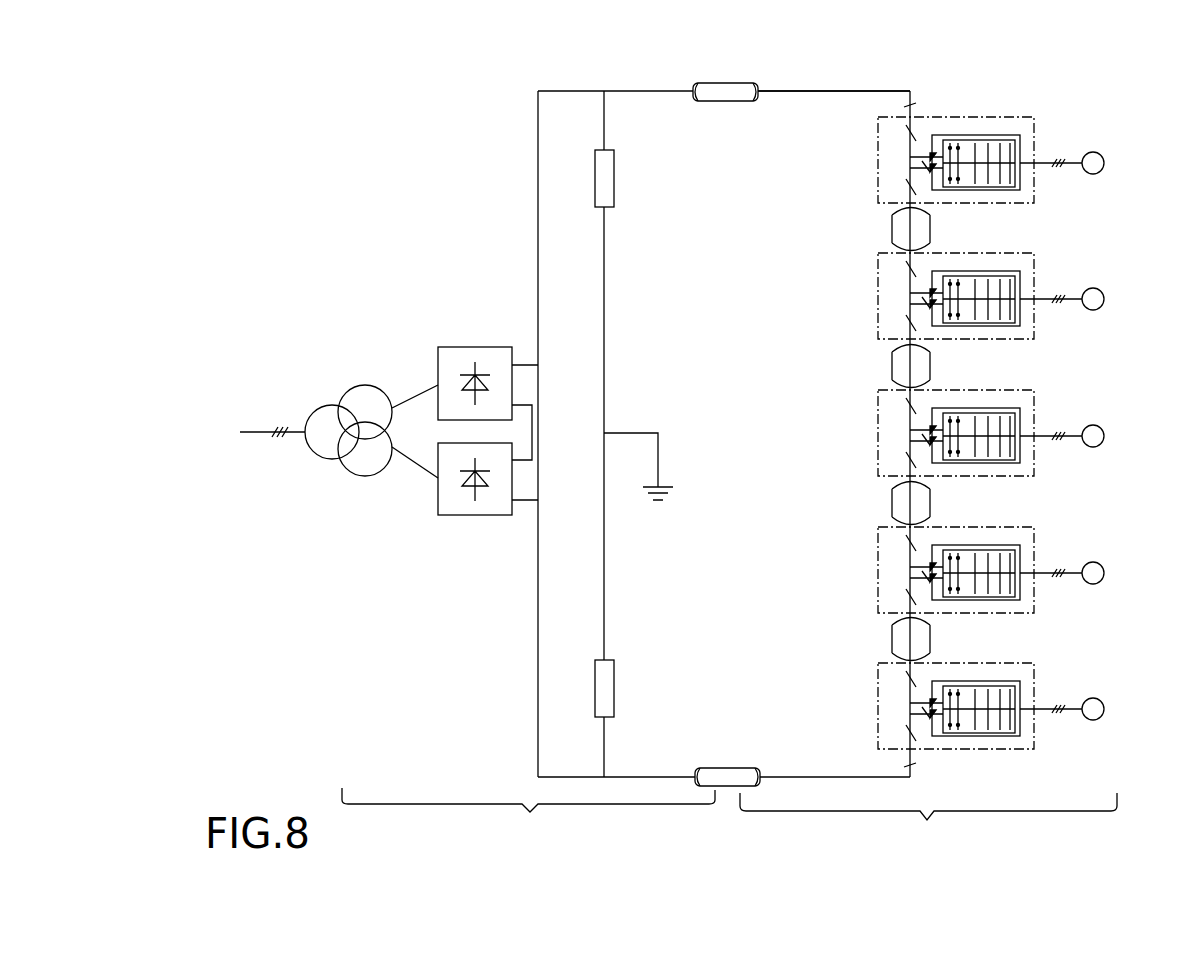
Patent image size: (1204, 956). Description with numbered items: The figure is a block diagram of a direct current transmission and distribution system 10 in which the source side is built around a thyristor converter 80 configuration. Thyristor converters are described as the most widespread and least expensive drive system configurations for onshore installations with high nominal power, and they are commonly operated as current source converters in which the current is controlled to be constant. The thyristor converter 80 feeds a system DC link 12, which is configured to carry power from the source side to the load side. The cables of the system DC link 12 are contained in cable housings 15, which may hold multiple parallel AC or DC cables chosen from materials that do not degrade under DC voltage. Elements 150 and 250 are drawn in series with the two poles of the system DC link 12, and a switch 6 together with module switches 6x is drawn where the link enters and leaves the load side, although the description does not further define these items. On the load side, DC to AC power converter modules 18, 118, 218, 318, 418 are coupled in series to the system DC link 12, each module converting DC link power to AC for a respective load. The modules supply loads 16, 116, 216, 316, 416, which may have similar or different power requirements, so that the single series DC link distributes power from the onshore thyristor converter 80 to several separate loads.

The direct current transmission and distribution system 10 is at (285, 96).
The thyristor converter 80 is at (491, 294).
The resistor / current limiting element (positive pole) 150 is at (614, 180).
The resistor / current limiting element (negative pole) 250 is at (614, 685).
The cable housing 15 is at (728, 84).
The system DC link 12 is at (691, 100).
The switch 6 is at (916, 435).
The module isolation switch 6x is at (901, 160).
The DC to AC power converter module 18 is at (957, 117).
The DC to AC power converter module 118 is at (957, 253).
The DC to AC power converter module 218 is at (957, 390).
The DC to AC power converter module 318 is at (957, 527).
The DC to AC power converter module 418 is at (957, 663).
The load 16 is at (1093, 152).
The load 116 is at (1093, 288).
The load 216 is at (1093, 425).
The load 316 is at (1093, 562).
The load 416 is at (1093, 698).